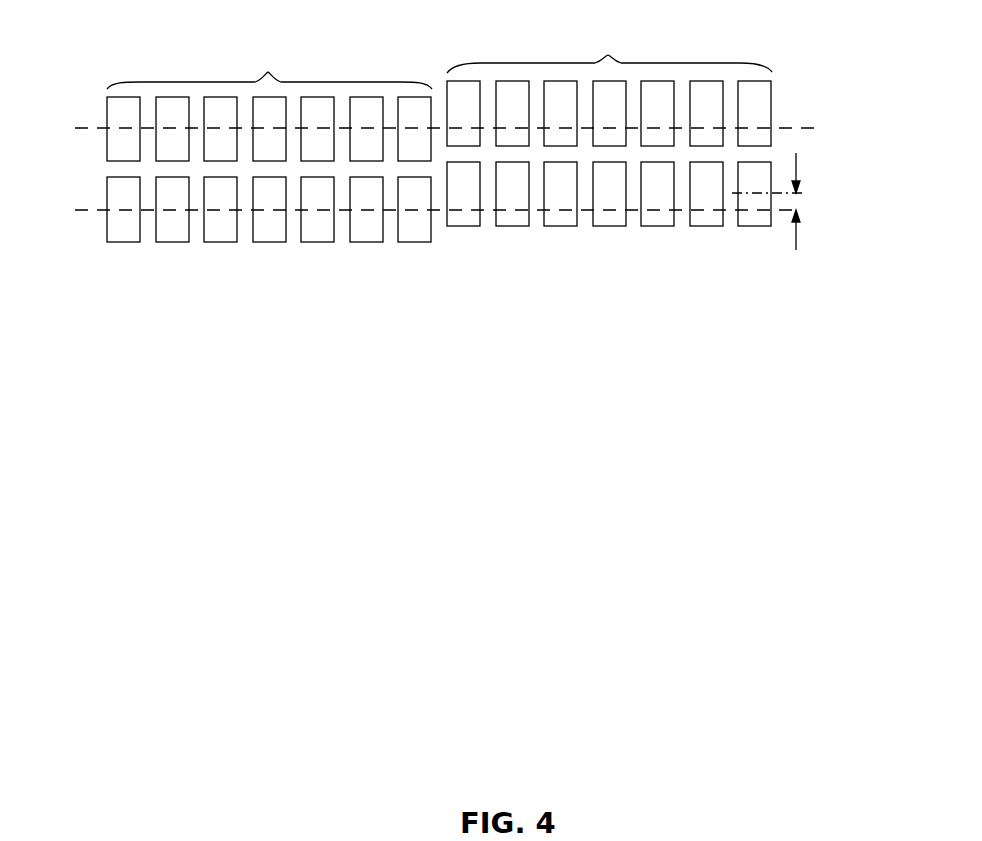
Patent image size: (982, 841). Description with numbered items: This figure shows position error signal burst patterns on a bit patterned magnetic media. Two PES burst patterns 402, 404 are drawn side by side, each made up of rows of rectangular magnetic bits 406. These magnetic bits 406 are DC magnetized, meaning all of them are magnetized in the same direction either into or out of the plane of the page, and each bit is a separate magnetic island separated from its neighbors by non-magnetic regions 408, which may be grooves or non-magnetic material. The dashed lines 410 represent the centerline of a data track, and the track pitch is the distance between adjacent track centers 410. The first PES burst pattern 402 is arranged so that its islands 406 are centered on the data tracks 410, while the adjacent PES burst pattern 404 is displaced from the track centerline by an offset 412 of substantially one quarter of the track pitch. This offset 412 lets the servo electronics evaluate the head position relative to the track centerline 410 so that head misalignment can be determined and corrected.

The first PES burst pattern 402 is at (320, 82).
The second PES burst pattern 404 is at (665, 63).
The magnetic bits 406 is at (125, 82).
The non-magnetic regions 408 is at (243, 103).
The dashed lines 410 is at (98, 128).
The offset 412 is at (798, 242).